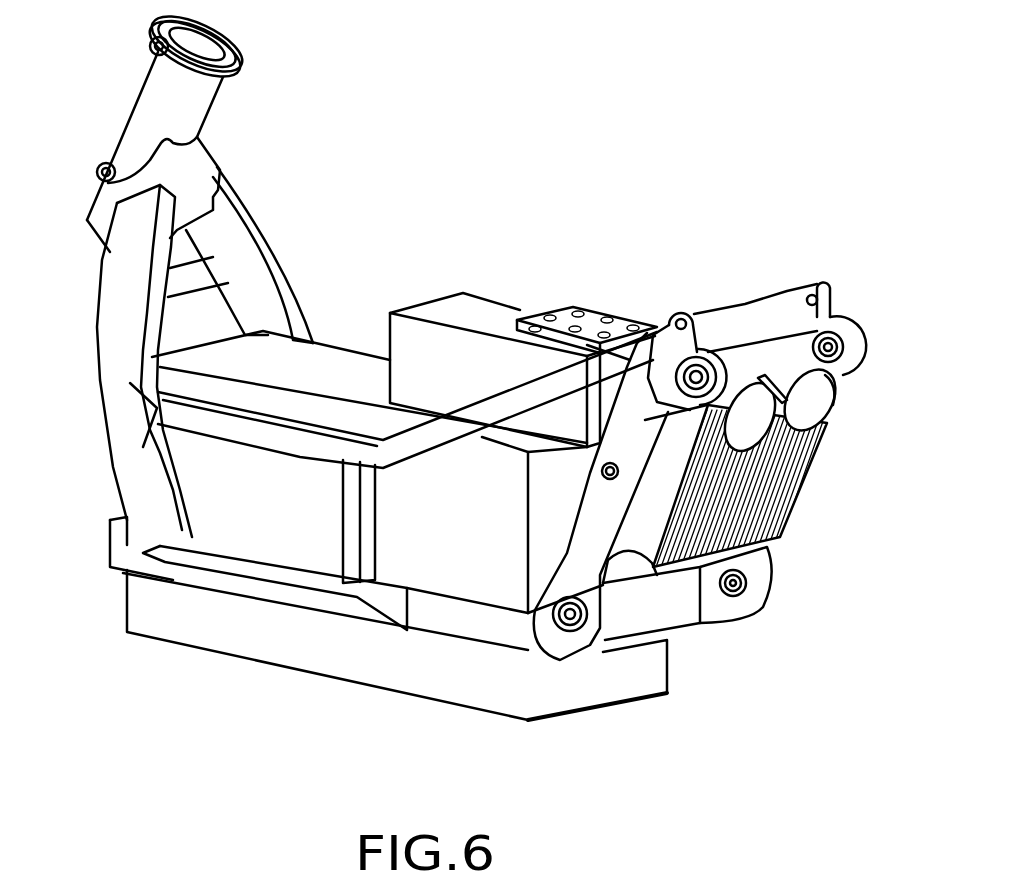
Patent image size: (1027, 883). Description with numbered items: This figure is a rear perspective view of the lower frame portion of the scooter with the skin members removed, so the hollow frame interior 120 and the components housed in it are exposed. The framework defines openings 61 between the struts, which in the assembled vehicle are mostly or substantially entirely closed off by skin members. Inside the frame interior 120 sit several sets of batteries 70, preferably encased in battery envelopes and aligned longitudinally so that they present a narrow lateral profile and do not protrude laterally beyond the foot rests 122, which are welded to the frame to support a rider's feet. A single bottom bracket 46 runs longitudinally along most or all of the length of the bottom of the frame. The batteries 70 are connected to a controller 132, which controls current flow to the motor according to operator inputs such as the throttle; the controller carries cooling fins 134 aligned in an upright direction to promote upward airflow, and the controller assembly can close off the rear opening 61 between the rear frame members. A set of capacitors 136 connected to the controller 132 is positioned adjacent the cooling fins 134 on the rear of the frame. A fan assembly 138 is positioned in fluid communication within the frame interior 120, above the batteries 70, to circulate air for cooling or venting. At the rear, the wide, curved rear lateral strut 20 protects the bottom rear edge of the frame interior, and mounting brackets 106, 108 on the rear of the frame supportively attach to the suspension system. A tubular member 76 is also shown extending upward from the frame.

The rear lateral strut 20 is at (637, 607).
The bottom bracket 46 is at (460, 690).
The opening 61 is at (143, 283).
The batteries 70 is at (272, 347).
The pipe 76 is at (165, 108).
The mounting bracket 106 is at (557, 638).
The mounting bracket 108 is at (798, 285).
The frame interior 120 is at (338, 292).
The foot rests 122 is at (252, 565).
The controller 132 is at (658, 410).
The cooling fins 134 is at (810, 480).
The capacitors 136 is at (812, 413).
The fan assembly 138 is at (607, 310).